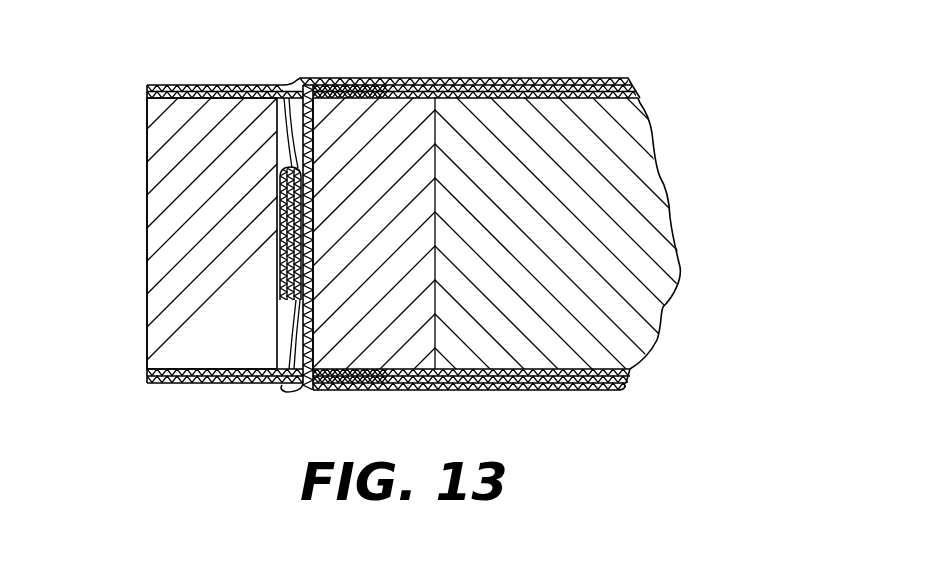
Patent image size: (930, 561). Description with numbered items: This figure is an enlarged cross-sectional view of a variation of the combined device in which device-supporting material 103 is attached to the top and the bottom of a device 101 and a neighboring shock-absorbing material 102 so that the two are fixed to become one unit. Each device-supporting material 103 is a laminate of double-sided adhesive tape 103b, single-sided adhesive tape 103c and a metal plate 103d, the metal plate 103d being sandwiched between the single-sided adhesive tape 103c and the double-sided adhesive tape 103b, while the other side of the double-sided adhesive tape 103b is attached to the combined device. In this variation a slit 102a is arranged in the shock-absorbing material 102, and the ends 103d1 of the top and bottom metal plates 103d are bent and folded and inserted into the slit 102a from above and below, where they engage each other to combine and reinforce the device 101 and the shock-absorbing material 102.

The device 101 is at (640, 300).
The shock-absorbing material 102 is at (162, 242).
The slit 102a is at (282, 165).
The device-supporting material 103 is at (449, 229).
The double-sided adhesive tape 103b is at (636, 97).
The single-sided adhesive tape 103c is at (610, 78).
The metal plate 103d is at (628, 88).
The ends of metal plates 103d1 is at (294, 82).